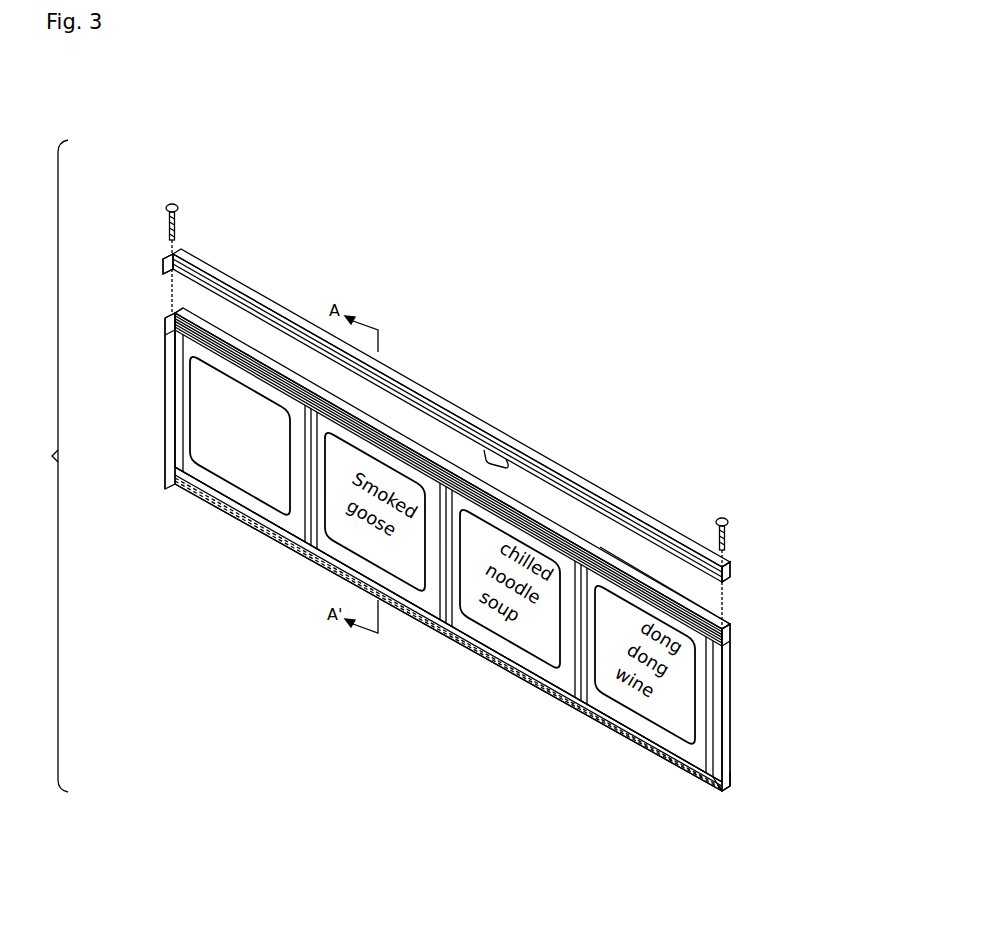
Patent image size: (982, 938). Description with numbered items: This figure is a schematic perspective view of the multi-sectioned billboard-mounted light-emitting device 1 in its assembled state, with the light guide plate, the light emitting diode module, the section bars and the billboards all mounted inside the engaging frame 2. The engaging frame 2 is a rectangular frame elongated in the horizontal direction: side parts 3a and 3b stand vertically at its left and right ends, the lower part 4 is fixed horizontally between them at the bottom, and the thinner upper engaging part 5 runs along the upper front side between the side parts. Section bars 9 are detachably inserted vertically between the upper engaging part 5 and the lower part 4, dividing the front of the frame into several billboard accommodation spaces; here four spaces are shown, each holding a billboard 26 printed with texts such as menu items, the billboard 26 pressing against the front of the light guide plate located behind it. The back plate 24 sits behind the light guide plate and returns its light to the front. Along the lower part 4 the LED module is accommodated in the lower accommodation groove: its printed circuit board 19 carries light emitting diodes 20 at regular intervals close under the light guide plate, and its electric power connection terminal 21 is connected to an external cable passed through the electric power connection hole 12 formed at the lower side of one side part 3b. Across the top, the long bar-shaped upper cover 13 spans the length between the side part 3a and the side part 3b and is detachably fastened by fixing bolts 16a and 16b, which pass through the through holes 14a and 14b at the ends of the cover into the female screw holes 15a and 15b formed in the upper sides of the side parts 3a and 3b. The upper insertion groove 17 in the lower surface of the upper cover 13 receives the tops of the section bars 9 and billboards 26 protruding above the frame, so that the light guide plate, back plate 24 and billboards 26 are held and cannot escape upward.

The menu display board assembly 1 is at (50, 466).
The engaging frame 2 is at (328, 577).
The side part 3a is at (170, 433).
The side part 3b is at (728, 676).
The lower part 4 is at (205, 505).
The upper engaging part 5 is at (173, 343).
The section bar 9 is at (433, 612).
The electric power connection hole 12 is at (724, 793).
The upper cover 13 is at (463, 420).
The through hole 14a is at (165, 258).
The through hole 14b is at (722, 580).
The female screw hole 15a is at (173, 315).
The female screw hole 15b is at (730, 623).
The fixing bolt 16a is at (178, 208).
The fixing bolt 16b is at (718, 520).
The upper insertion groove 17 is at (506, 453).
The printed circuit board 19 is at (533, 697).
The light emitting diodes 20 is at (592, 725).
The electric power connection terminal 21 is at (720, 793).
The back plate 24 is at (700, 615).
The billboard 26 is at (185, 392).